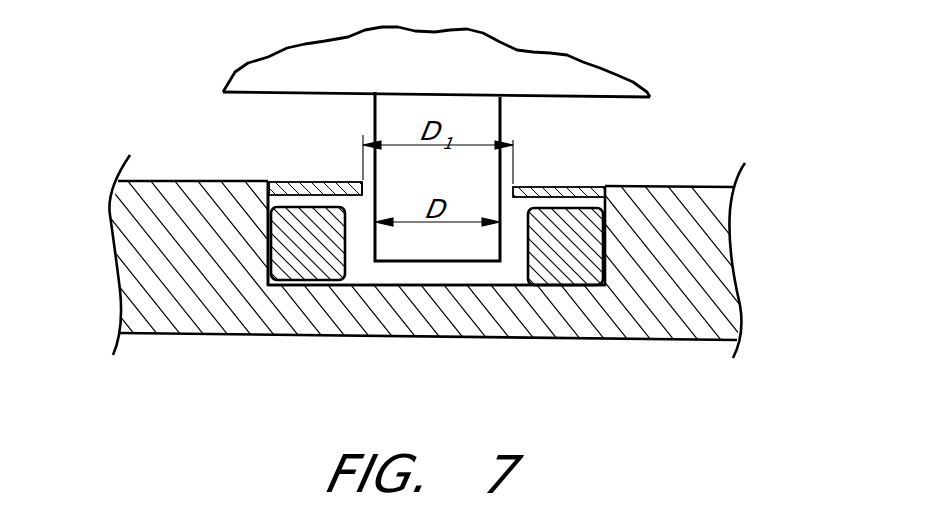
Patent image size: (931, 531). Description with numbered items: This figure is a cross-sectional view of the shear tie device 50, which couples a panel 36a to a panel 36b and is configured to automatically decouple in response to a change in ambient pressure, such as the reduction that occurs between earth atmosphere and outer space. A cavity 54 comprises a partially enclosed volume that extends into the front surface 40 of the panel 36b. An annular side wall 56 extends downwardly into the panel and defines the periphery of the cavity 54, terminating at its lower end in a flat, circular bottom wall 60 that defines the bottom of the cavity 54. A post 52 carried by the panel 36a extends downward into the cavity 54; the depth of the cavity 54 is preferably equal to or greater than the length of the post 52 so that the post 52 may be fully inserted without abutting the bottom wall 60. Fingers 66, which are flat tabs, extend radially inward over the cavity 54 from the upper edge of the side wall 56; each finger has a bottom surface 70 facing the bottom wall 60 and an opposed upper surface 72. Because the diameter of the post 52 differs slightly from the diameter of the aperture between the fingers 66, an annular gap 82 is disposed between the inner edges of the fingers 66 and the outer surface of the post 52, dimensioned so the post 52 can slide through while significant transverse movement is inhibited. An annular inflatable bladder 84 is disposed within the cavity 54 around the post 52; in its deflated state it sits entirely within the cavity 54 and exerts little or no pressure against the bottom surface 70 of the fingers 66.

The panel 36a is at (515, 60).
The panel 36b is at (697, 253).
The front surface 40 is at (248, 95).
The shear tie device 50 is at (688, 110).
The post 52 is at (503, 115).
The cavity 54 is at (424, 272).
The annular side wall 56 is at (270, 242).
The bottom wall 60 is at (357, 284).
The fingers 66 is at (576, 180).
The bottom surface 70 is at (265, 205).
The upper surface 72 is at (300, 180).
The annular gap 82 is at (363, 178).
The bladder 84 is at (566, 272).